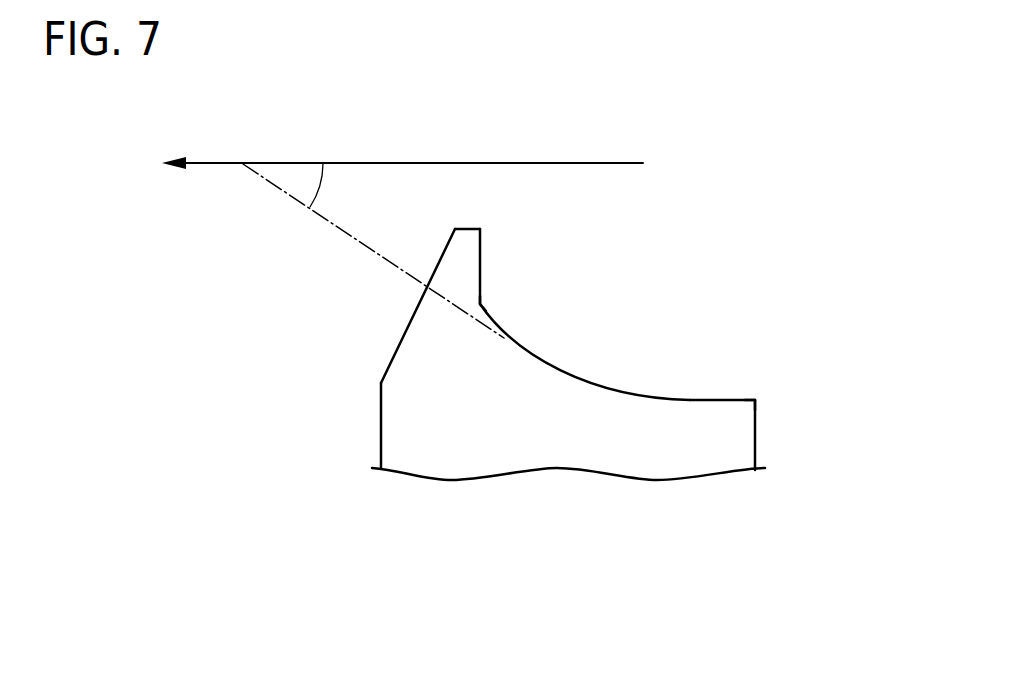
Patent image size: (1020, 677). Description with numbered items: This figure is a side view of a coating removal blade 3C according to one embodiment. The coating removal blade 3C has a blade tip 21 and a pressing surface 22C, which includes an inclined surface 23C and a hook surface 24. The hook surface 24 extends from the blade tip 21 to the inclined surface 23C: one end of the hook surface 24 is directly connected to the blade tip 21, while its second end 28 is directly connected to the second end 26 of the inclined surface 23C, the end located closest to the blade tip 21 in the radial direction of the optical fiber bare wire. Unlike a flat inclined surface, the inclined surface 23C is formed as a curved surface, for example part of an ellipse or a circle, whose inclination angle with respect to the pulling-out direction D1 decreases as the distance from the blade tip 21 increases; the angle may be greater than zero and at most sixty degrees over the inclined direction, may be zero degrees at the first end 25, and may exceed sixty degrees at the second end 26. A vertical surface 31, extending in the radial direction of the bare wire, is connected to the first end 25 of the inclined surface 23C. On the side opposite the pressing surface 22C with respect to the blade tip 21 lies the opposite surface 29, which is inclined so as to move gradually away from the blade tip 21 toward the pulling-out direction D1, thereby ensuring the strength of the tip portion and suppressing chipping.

The pulling-out direction D1 is at (217, 163).
The blade tip 21 is at (462, 229).
The hook surface 24 is at (481, 262).
The opposite surface 29 is at (403, 332).
The second end of the inclined surface 26 is at (478, 416).
The second end of the hook surface 28 is at (480, 304).
The pressing surface 22C is at (565, 368).
The inclined surface 23C is at (643, 396).
The first end of the inclined surface 25 is at (755, 399).
The vertical surface 31 is at (755, 431).
The coating removal blade 3C is at (529, 315).